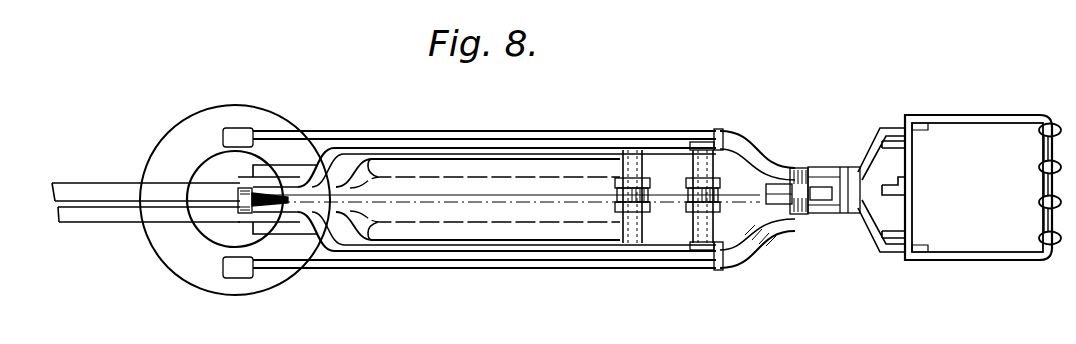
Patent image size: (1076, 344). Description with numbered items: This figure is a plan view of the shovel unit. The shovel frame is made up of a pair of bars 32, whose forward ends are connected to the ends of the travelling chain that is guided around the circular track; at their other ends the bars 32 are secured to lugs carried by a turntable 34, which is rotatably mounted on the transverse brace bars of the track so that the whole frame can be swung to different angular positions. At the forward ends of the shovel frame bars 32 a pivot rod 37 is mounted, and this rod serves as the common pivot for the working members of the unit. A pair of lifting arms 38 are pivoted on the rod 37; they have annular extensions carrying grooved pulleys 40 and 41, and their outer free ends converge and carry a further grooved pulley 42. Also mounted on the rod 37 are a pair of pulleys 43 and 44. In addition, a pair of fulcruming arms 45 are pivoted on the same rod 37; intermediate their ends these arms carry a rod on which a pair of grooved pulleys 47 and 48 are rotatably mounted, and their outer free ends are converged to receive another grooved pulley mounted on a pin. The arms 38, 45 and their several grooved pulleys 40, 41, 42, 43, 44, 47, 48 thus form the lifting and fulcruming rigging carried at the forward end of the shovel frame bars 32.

The bars 32 is at (657, 131).
The turntable 34 is at (157, 243).
The pivot rod 37 is at (720, 262).
The lifting arms 38 is at (570, 141).
The grooved pulley 40 is at (806, 208).
The grooved pulley 41 is at (782, 188).
The grooved pulley 42 is at (242, 207).
The pulley 43 is at (727, 190).
The pulley 44 is at (752, 249).
The fulcruming arms 45 is at (523, 150).
The grooved pulley 47 is at (616, 204).
The grooved pulley 48 is at (647, 190).